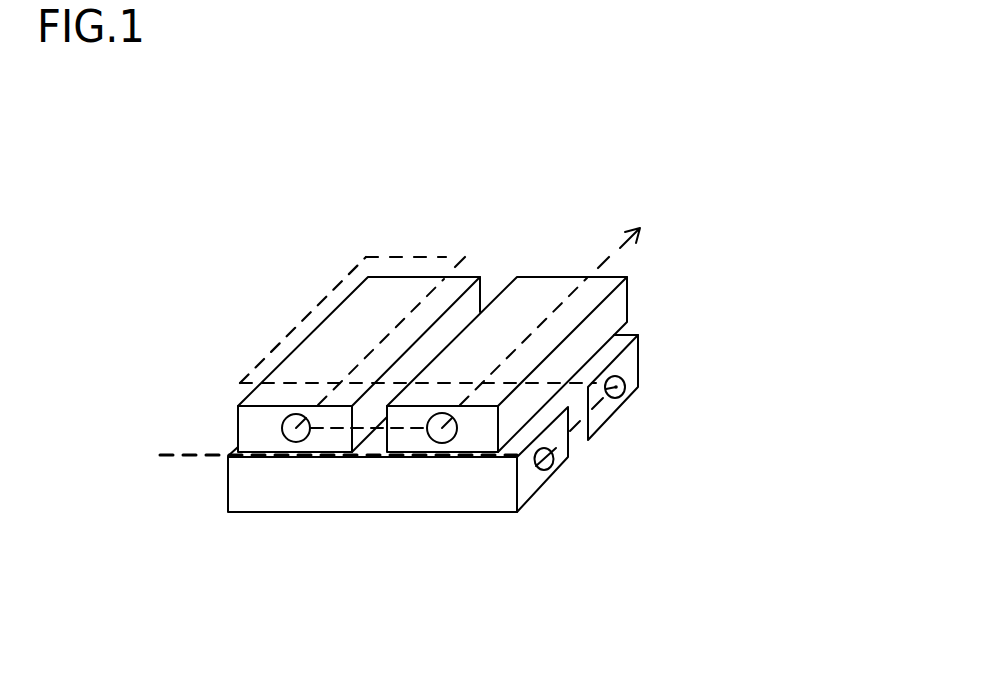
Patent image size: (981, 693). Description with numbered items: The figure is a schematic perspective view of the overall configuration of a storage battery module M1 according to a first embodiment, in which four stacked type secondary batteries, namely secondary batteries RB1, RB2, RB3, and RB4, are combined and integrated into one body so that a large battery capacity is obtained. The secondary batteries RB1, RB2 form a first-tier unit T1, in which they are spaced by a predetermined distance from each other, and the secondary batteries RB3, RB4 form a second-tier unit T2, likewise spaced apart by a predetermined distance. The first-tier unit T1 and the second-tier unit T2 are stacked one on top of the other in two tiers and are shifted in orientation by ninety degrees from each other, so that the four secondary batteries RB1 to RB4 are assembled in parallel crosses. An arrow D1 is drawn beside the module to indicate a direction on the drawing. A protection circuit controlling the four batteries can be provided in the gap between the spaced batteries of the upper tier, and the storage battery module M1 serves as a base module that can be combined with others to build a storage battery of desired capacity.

The storage battery module M1 is at (675, 218).
The first direction D1 is at (607, 258).
The first-tier unit T1 is at (740, 418).
The second-tier unit T2 is at (252, 195).
The secondary battery RB1 is at (525, 482).
The secondary battery RB2 is at (594, 423).
The secondary battery RB3 is at (540, 285).
The secondary battery RB4 is at (395, 296).